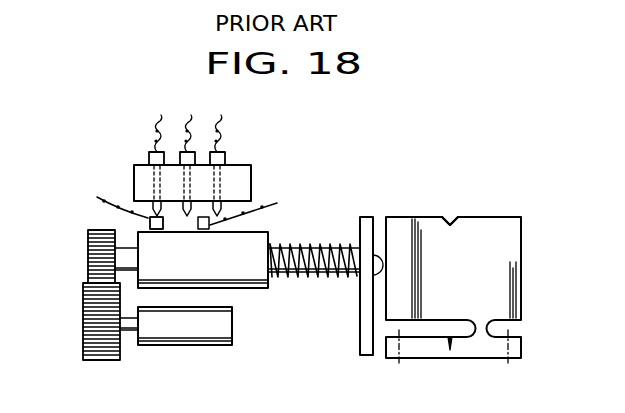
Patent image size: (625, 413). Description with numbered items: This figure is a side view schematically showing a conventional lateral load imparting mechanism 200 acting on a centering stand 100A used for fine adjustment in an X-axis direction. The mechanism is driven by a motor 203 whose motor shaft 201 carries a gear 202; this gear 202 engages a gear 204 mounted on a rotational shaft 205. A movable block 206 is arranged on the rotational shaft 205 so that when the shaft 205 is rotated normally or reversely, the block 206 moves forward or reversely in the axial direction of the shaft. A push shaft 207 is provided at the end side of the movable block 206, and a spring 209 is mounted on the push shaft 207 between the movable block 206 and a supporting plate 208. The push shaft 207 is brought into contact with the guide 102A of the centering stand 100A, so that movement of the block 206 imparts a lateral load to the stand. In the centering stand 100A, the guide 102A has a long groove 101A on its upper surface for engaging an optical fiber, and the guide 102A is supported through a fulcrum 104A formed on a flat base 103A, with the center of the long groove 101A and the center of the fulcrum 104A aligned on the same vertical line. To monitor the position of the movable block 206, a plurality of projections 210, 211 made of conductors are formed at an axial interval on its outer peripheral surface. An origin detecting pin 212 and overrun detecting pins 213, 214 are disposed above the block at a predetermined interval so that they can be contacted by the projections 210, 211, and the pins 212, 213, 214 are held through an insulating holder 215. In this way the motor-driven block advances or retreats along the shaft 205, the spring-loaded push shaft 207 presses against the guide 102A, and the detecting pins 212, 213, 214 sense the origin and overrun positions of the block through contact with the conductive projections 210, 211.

The centering stand 100A is at (503, 215).
The long groove 101A is at (447, 217).
The guide 102A is at (510, 244).
The flat base 103A is at (418, 345).
The fulcrum 104A is at (478, 333).
The lateral load imparting mechanism 200 is at (242, 292).
The motor shaft 201 is at (129, 333).
The gear 202 is at (88, 323).
The motor 203 is at (183, 340).
The gear 204 is at (88, 268).
The rotational shaft 205 is at (130, 262).
The movable block 206 is at (257, 278).
The push shaft 207 is at (323, 243).
The supporting plate 208 is at (370, 216).
The spring 209 is at (293, 243).
The projection 210 is at (160, 229).
The projection 211 is at (205, 229).
The origin detecting pin 212 is at (150, 219).
The overrun detecting pin 213 is at (204, 212).
The overrun detecting pin 214 is at (222, 205).
The insulating holder 215 is at (137, 166).